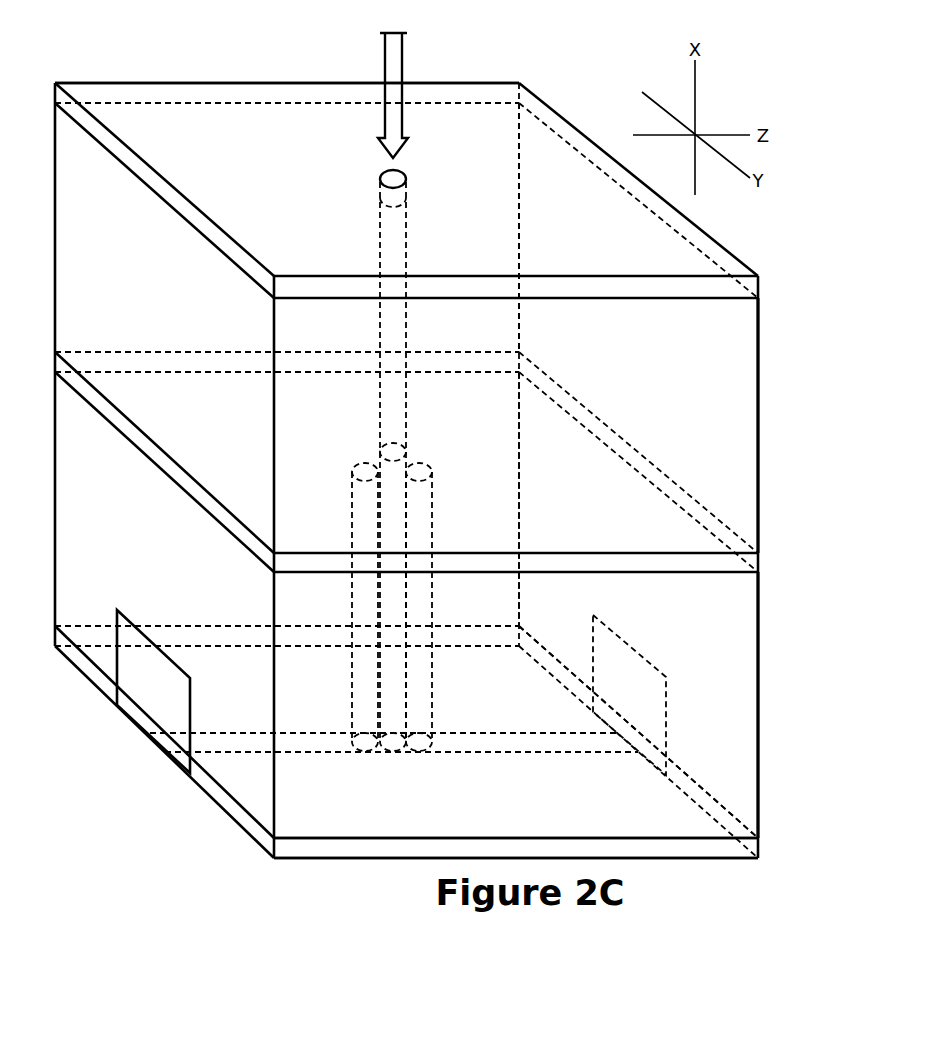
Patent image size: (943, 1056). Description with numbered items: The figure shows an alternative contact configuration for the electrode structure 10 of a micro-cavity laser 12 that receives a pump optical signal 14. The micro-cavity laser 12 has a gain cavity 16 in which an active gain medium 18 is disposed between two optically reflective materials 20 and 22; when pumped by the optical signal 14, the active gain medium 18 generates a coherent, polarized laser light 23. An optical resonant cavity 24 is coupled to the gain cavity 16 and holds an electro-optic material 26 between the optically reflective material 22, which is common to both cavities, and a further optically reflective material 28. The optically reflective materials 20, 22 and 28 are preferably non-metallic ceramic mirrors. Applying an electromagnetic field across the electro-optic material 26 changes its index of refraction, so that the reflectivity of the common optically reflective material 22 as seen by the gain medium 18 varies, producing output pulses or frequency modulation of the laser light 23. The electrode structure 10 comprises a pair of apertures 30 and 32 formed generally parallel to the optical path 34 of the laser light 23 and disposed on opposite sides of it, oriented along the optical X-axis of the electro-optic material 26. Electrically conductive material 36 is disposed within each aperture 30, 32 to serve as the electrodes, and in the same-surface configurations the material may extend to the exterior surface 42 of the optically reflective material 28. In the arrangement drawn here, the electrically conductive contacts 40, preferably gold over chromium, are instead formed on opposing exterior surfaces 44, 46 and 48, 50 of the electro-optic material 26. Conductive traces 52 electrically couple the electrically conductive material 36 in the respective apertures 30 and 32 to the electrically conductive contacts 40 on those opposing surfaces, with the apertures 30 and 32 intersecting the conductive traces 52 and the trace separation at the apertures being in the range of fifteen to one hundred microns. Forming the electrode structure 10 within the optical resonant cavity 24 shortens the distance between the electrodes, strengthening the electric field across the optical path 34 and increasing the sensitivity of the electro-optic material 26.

The electrode structure 10 is at (434, 442).
The micro-cavity laser 12 is at (206, 62).
The optical signal 14 is at (404, 60).
The gain cavity 16 is at (774, 370).
The active gain medium 18 is at (760, 424).
The optically reflective material 20 is at (760, 289).
The optically reflective material 22 is at (760, 563).
The laser light 23 is at (408, 323).
The optical resonant cavity 24 is at (774, 655).
The electro-optic material 26 is at (760, 732).
The optically reflective material 28 is at (760, 847).
The aperture 30 is at (433, 518).
The aperture 32 is at (352, 519).
The optical path 34 is at (406, 598).
The electrically conductive material 36 is at (352, 463).
The electrically conductive contact 40 is at (121, 617).
The exterior surface 42 is at (352, 860).
The exterior surface 44 is at (232, 773).
The exterior surface 46 is at (730, 694).
The exterior surface 48 is at (657, 830).
The exterior surface 50 is at (500, 496).
The conductive trace 52 is at (238, 732).